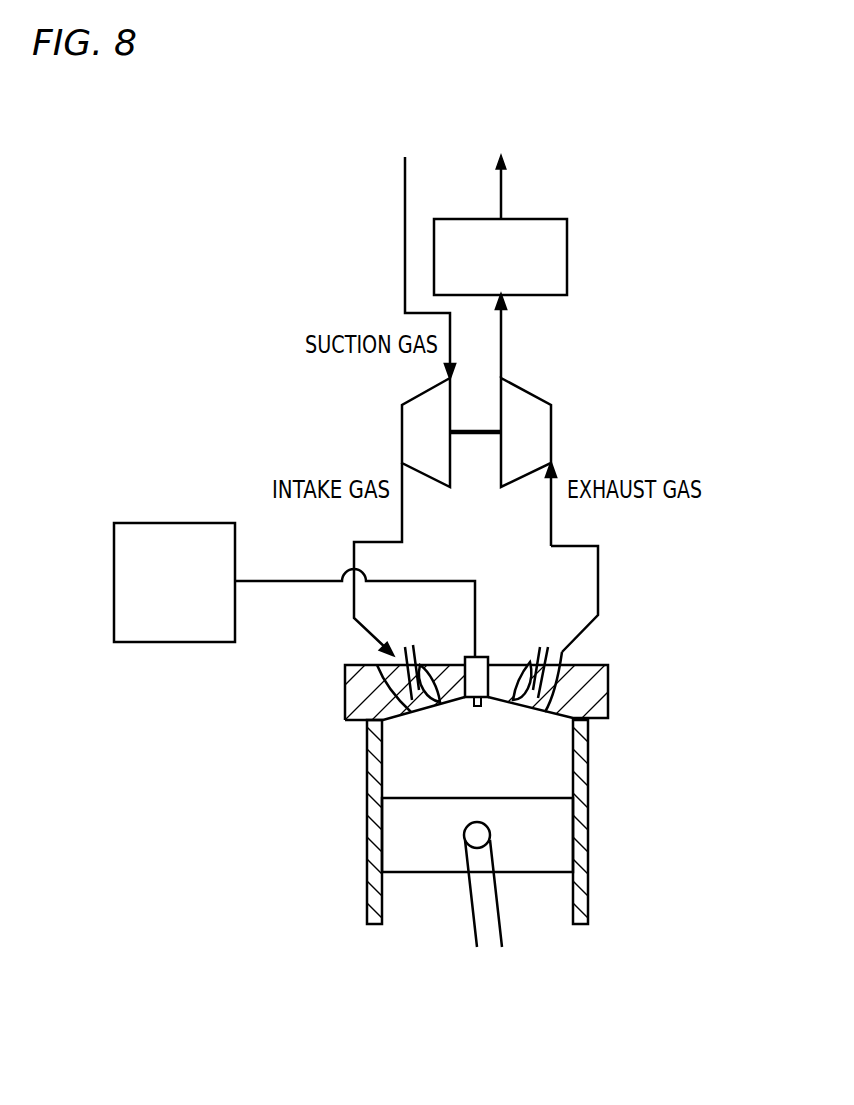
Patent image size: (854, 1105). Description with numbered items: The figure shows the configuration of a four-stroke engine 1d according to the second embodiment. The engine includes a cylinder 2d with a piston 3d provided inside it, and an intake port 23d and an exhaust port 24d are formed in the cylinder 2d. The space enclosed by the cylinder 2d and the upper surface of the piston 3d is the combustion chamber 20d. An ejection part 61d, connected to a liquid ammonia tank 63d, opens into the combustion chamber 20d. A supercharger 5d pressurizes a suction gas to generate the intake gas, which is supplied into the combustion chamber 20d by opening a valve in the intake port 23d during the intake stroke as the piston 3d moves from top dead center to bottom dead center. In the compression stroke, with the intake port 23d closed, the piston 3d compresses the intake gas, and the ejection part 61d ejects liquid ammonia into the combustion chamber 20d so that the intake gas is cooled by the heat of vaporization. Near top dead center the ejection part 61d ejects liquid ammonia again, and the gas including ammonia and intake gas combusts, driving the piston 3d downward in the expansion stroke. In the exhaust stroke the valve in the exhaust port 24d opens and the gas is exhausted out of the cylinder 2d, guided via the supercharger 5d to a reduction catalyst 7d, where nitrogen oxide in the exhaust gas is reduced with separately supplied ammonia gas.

The four-stroke engine 1d is at (269, 143).
The cylinder 2d is at (352, 768).
The piston 3d is at (558, 833).
The supercharger 5d is at (568, 432).
The reduction catalyst 7d is at (537, 219).
The combustion chamber 20d is at (502, 765).
The intake port 23d is at (389, 664).
The exhaust port 24d is at (563, 667).
The ejection part 61d is at (482, 680).
The liquid ammonia tank 63d is at (170, 523).